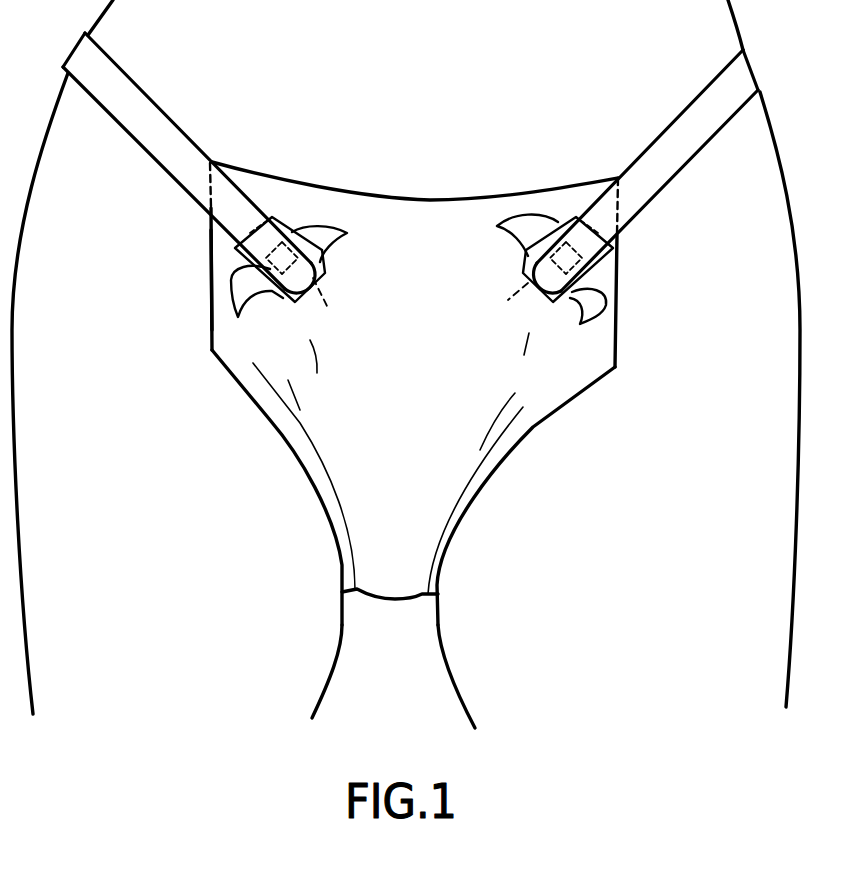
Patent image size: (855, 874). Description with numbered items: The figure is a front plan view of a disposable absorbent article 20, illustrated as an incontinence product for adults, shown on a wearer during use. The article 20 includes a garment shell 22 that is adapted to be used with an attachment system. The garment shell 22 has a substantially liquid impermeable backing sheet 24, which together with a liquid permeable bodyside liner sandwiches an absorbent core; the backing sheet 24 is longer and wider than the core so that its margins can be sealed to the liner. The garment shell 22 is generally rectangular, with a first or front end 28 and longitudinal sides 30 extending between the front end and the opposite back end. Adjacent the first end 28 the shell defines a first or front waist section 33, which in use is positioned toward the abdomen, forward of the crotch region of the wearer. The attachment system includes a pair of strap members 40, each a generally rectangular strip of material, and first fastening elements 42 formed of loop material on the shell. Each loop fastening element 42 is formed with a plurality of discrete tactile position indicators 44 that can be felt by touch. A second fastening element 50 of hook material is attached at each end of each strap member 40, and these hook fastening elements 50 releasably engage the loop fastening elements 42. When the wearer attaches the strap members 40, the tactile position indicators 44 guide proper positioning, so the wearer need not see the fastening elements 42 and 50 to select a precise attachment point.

The disposable absorbent article 20 is at (281, 58).
The garment shell 22 is at (368, 170).
The backing sheet 24 is at (398, 462).
The first end 28 is at (477, 195).
The longitudinal sides 30 is at (211, 347).
The first waist section 33 is at (186, 313).
The strap members 40 is at (127, 68).
The first fastening elements 42 is at (250, 246).
The tactile position indicators 44 is at (348, 234).
The second fastening elements 50 is at (420, 312).